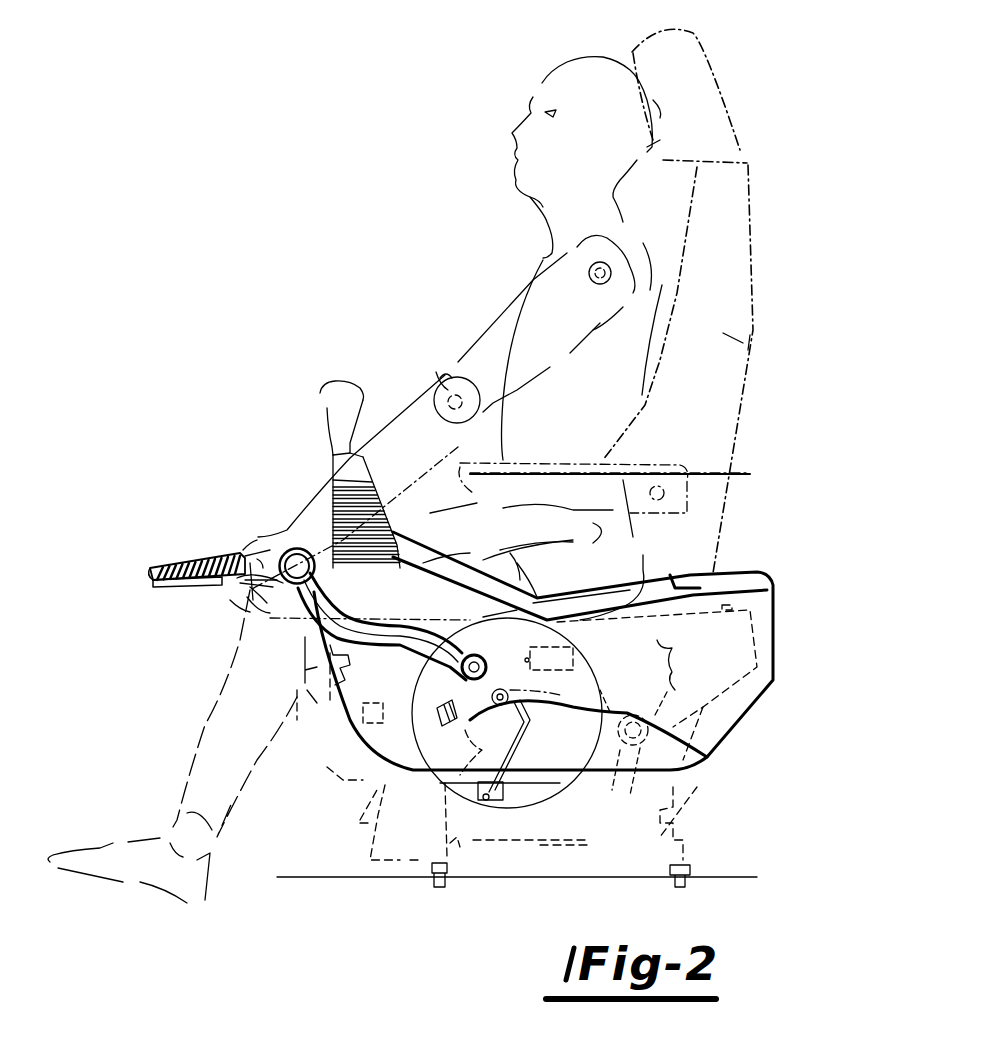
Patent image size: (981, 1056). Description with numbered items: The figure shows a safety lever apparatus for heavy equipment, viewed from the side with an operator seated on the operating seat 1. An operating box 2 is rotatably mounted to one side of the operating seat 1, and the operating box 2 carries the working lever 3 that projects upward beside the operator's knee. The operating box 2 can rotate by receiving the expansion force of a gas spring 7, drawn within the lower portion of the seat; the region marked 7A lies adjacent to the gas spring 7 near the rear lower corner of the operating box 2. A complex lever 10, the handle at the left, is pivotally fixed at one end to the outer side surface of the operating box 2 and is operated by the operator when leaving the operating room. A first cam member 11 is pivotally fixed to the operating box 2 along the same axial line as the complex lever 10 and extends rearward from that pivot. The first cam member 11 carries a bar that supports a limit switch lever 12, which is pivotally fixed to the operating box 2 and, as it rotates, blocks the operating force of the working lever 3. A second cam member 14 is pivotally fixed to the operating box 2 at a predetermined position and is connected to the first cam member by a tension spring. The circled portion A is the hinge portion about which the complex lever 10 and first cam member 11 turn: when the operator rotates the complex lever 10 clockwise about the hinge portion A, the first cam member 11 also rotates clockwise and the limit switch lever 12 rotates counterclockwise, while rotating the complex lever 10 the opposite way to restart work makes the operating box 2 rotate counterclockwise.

The operating seat 1 is at (765, 343).
The operating box 2 is at (775, 655).
The working lever 3 is at (340, 382).
The gas spring 7 is at (527, 720).
The mechanism portion 7A is at (700, 758).
The complex lever 10 is at (160, 598).
The first cam member 11 is at (412, 680).
The limit switch lever 12 is at (580, 633).
The second cam member 14 is at (470, 745).
The hinge portion A is at (522, 808).